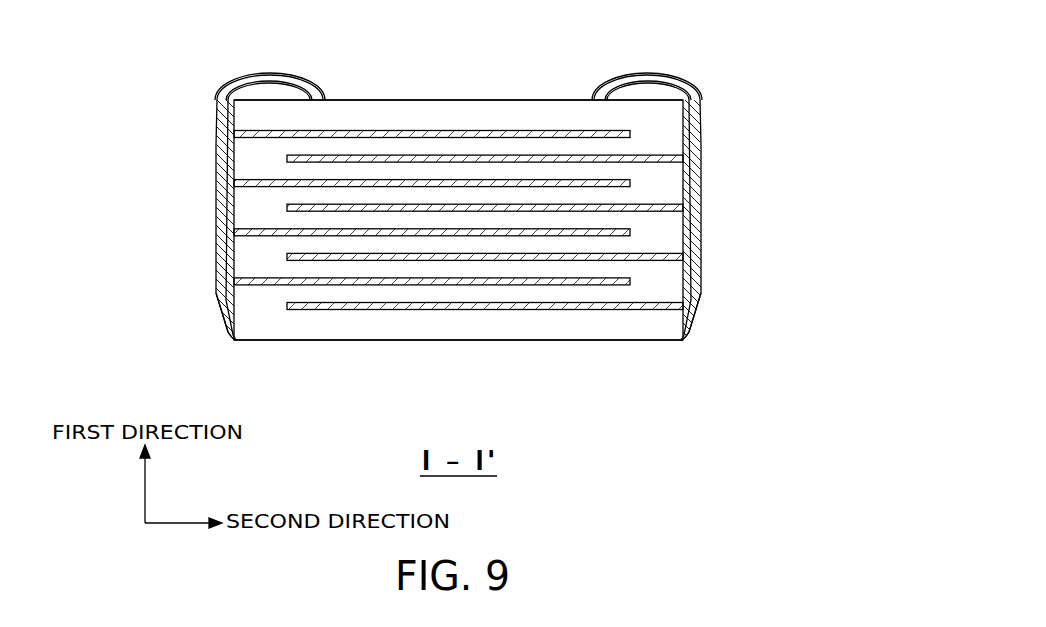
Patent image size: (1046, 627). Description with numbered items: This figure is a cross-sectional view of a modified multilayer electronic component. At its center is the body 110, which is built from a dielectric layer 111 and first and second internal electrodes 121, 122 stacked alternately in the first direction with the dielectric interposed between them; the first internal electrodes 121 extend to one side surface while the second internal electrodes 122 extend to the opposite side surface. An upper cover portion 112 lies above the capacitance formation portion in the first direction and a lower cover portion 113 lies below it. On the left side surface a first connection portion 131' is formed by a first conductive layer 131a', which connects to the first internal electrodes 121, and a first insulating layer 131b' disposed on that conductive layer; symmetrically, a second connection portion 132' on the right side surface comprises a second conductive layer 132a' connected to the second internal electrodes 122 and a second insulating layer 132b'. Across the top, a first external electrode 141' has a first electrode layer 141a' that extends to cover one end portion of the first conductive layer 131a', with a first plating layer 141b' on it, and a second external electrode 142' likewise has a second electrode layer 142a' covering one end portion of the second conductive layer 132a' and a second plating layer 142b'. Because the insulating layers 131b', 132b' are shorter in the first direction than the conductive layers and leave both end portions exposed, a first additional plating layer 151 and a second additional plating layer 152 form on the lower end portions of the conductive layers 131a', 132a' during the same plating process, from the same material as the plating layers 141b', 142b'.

The body 110 is at (458, 212).
The dielectric layer 111 is at (510, 146).
The upper cover portion 112 is at (345, 108).
The lower cover portion 113 is at (360, 328).
The first internal electrode 121 is at (466, 130).
The second internal electrode 122 is at (566, 156).
The first connection portion 131' is at (177, 207).
The first conductive layer 131a' is at (202, 211).
The first insulating layer 131b' is at (209, 207).
The second connection portion 132' is at (743, 207).
The second conductive layer 132a' is at (717, 211).
The second insulating layer 132b' is at (710, 207).
The first external electrode 141' is at (183, 72).
The first electrode layer 141a' is at (208, 90).
The first plating layer 141b' is at (215, 73).
The second external electrode 142' is at (734, 76).
The second electrode layer 142a' is at (706, 94).
The second plating layer 142b' is at (699, 73).
The first additional plating layer 151 is at (225, 333).
The second additional plating layer 152 is at (695, 333).